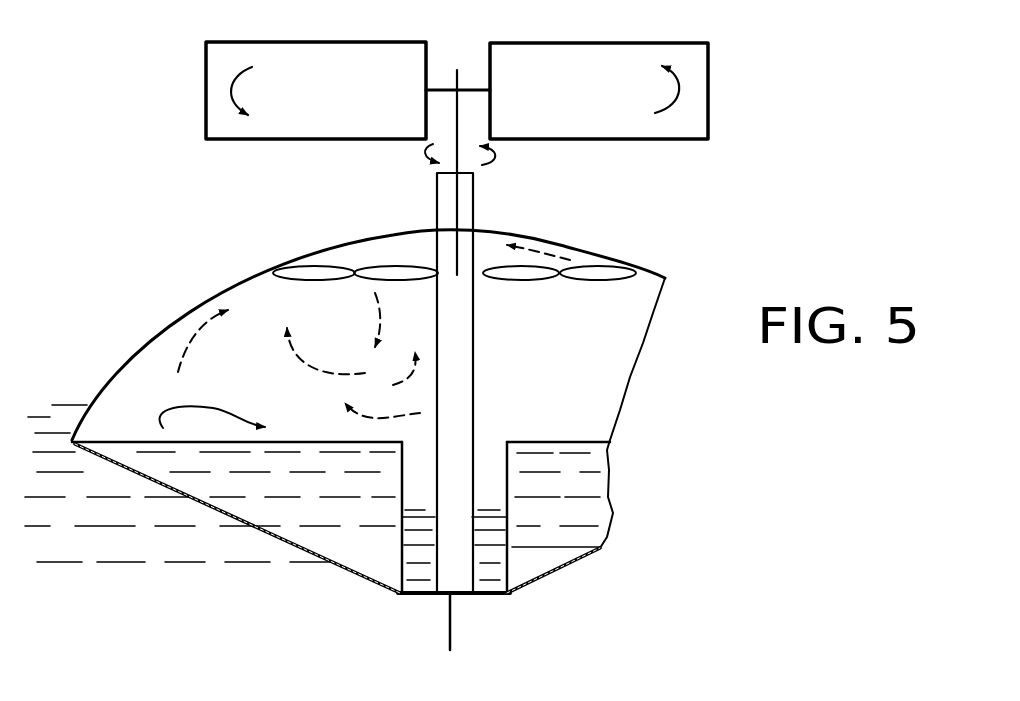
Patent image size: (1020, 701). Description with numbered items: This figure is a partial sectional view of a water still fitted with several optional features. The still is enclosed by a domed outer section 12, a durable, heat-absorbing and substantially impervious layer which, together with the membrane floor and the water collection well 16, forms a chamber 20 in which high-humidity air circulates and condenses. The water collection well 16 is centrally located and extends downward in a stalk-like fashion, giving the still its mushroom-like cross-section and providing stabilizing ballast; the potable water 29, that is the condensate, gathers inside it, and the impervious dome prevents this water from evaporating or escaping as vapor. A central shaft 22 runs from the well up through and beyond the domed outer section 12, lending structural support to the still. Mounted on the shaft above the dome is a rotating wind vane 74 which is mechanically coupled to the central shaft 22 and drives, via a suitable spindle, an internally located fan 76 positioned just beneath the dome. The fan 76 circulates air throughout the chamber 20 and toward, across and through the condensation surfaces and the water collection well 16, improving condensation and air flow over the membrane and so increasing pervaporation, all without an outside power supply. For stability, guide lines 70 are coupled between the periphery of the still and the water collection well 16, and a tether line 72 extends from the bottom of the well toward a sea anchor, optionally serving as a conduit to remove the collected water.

The rotating wind vane 74 is at (296, 42).
The central shaft 22 is at (476, 207).
The fan 76 is at (293, 268).
The domed outer section 12 is at (193, 307).
The chamber 20 is at (297, 403).
The water collection well 16 is at (507, 545).
The potable water 29 is at (488, 562).
The guide lines 70 is at (346, 571).
The tether line 72 is at (448, 618).